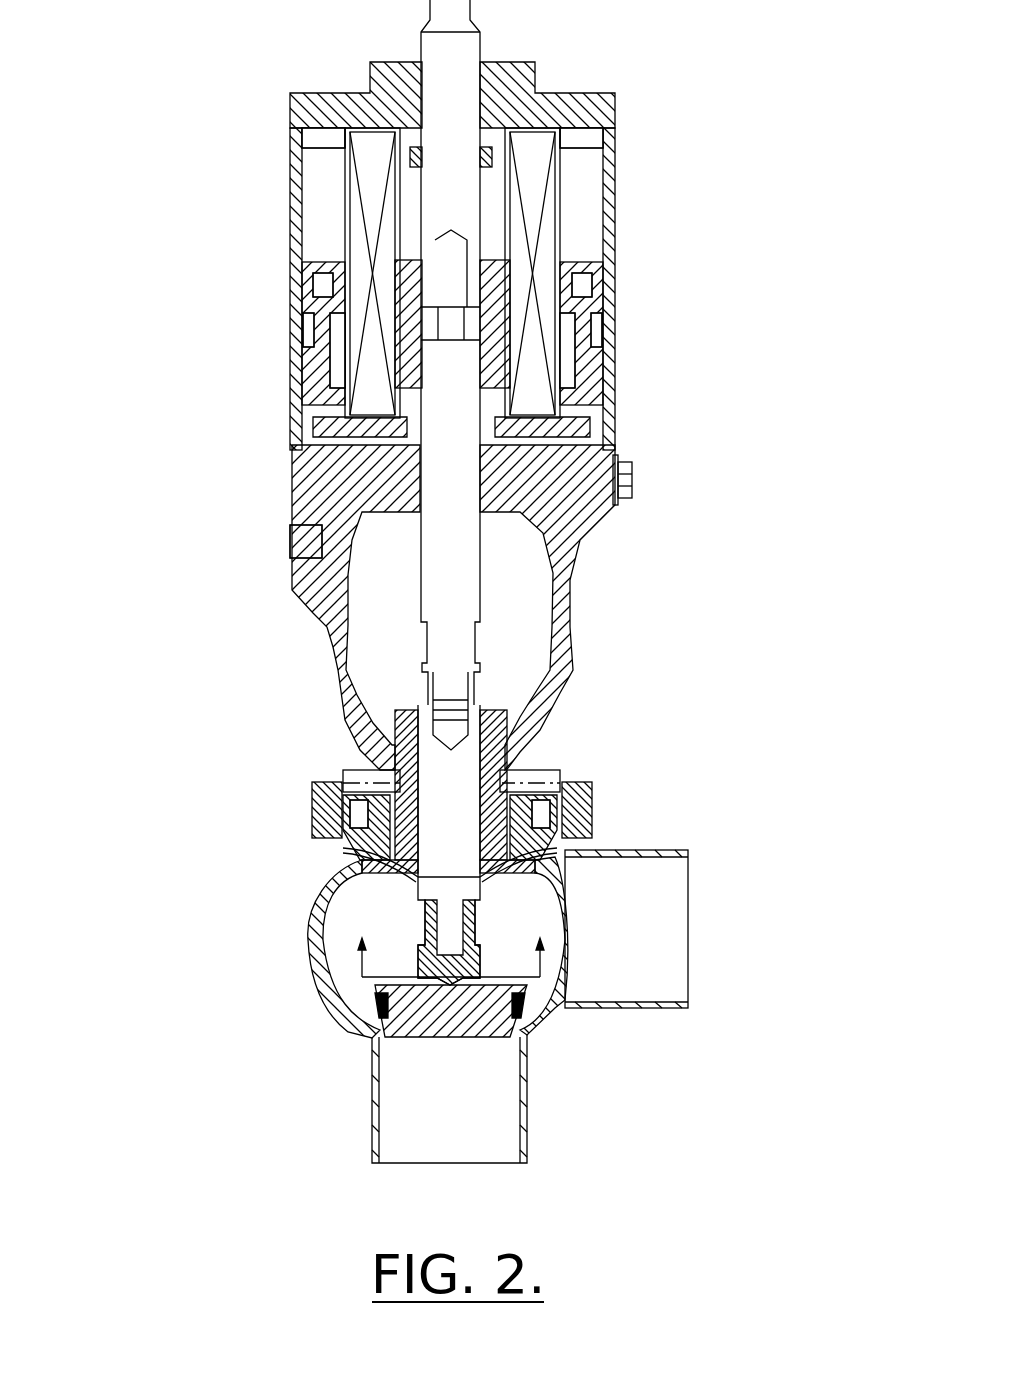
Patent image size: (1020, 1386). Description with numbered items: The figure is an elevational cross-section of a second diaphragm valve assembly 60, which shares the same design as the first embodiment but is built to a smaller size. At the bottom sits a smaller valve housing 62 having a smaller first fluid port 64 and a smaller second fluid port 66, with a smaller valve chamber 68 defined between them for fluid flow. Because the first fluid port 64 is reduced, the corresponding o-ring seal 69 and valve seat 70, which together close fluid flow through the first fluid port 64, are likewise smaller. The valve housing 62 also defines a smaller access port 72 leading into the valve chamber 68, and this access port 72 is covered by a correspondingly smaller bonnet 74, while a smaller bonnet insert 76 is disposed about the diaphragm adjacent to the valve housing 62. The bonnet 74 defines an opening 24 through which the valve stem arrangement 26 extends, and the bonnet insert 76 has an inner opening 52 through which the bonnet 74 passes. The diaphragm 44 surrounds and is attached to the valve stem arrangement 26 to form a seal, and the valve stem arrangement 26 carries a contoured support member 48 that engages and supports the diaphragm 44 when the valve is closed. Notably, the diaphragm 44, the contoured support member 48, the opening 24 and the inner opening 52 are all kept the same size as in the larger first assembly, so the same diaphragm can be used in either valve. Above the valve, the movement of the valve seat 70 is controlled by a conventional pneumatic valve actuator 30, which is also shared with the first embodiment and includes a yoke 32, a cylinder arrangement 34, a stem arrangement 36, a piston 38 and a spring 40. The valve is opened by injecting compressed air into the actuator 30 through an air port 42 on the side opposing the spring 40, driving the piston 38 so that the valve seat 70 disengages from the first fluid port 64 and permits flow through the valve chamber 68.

The opening 24 is at (403, 800).
The valve stem arrangement 26 is at (433, 863).
The pneumatic valve actuator 30 is at (697, 601).
The yoke 32 is at (565, 665).
The cylinder arrangement 34 is at (607, 143).
The stem arrangement 36 is at (470, 563).
The piston 38 is at (307, 388).
The spring 40 is at (362, 208).
The air port 42 is at (278, 539).
The diaphragm 44 is at (417, 870).
The contoured support member 48 is at (500, 870).
The inner opening 52 is at (507, 830).
The second diaphragm valve assembly 60 is at (160, 719).
The valve housing 62 is at (315, 930).
The first fluid port 64 is at (421, 1107).
The second fluid port 66 is at (658, 964).
The valve chamber 68 is at (344, 937).
The o-ring seal 69 is at (388, 1025).
The valve seat 70 is at (483, 1022).
The access port 72 is at (532, 870).
The bonnet 74 is at (535, 765).
The bonnet insert 76 is at (342, 847).